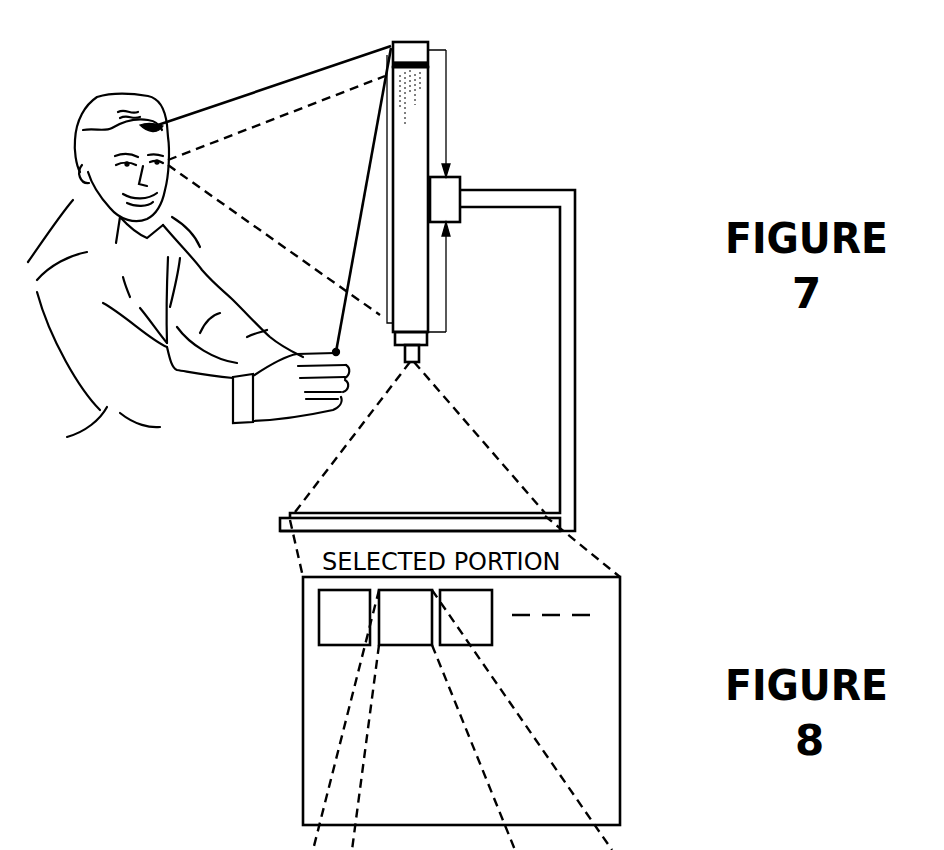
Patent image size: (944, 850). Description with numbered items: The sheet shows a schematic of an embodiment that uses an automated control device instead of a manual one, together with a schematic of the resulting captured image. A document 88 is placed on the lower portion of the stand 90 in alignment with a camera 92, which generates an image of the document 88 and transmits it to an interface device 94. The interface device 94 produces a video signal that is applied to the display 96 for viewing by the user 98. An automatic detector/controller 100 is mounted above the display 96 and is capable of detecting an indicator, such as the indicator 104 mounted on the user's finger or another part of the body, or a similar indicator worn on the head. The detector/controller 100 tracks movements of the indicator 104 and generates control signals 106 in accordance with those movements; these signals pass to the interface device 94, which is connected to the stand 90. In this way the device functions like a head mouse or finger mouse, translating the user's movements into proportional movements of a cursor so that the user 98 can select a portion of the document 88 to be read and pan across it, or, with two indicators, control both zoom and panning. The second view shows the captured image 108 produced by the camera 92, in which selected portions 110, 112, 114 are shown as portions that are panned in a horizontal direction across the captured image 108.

In FIG. 7, the document 88 is at (305, 516).
In FIG. 7, the stand 90 is at (577, 200).
In FIG. 7, the camera 92 is at (427, 340).
In FIG. 7, the interface device 94 is at (460, 183).
In FIG. 7, the display 96 is at (430, 273).
In FIG. 7, the user 98 is at (100, 84).
In FIG. 7, the detector/controller 100 is at (405, 40).
In FIG. 7, the indicator 104 is at (162, 127).
In FIG. 7, the control signals 106 is at (447, 62).
In FIG. 8, the captured image 108 is at (303, 745).
In FIG. 8, the selected portion 110 is at (319, 612).
In FIG. 8, the selected portion 112 is at (410, 647).
In FIG. 8, the selected portion 114 is at (493, 625).